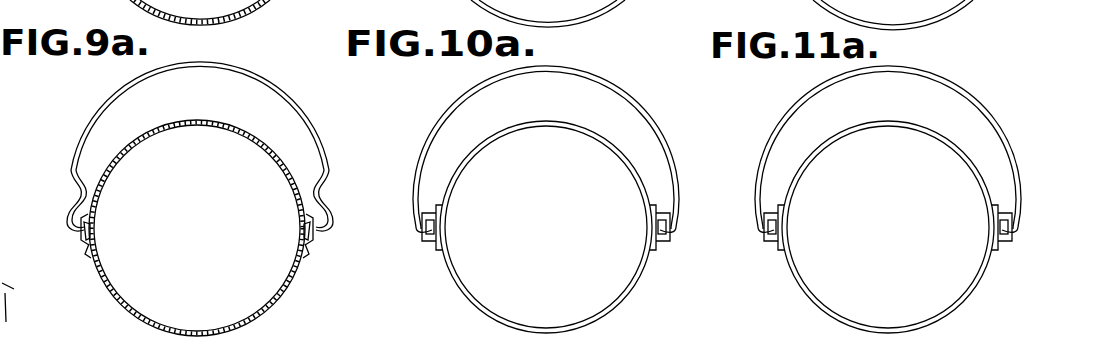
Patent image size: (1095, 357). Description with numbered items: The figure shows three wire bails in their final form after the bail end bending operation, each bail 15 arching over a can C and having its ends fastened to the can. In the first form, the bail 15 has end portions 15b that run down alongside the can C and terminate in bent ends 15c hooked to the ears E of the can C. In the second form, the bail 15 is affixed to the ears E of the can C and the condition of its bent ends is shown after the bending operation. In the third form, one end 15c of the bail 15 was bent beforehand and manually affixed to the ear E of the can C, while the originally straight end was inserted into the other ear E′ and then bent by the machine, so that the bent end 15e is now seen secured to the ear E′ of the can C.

In FIG. 9A, the bail 15 is at (186, 69).
In FIG. 10A, the bail 15 is at (532, 69).
In FIG. 11A, the bail 15 is at (876, 69).
In FIG. 9A, the can C is at (180, 121).
In FIG. 10A, the can C is at (530, 121).
In FIG. 11A, the can C is at (872, 121).
In FIG. 9A, the strap end portions 15b is at (66, 208).
In FIG. 9A, the bent end of bail 15c is at (82, 230).
In FIG. 10A, the bent end of bail 15c is at (420, 230).
In FIG. 11A, the bent end of bail 15c is at (766, 246).
In FIG. 10A, the bent end of bail 15e is at (415, 214).
In FIG. 11A, the bent end of bail 15e is at (765, 229).
In FIG. 9A, the ear E is at (88, 252).
In FIG. 10A, the other ear E′ is at (656, 205).
In FIG. 11A, the other ear E′ is at (776, 205).